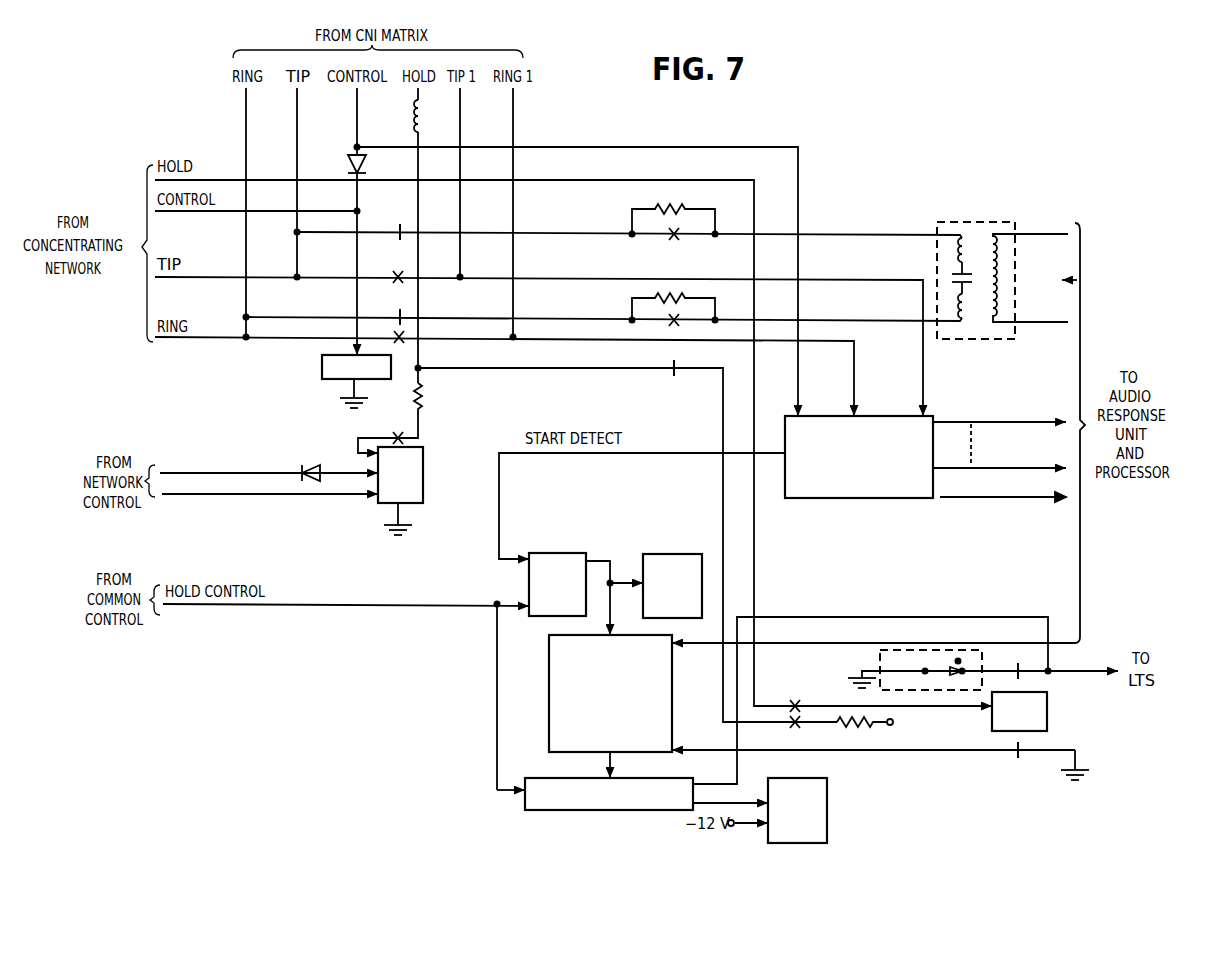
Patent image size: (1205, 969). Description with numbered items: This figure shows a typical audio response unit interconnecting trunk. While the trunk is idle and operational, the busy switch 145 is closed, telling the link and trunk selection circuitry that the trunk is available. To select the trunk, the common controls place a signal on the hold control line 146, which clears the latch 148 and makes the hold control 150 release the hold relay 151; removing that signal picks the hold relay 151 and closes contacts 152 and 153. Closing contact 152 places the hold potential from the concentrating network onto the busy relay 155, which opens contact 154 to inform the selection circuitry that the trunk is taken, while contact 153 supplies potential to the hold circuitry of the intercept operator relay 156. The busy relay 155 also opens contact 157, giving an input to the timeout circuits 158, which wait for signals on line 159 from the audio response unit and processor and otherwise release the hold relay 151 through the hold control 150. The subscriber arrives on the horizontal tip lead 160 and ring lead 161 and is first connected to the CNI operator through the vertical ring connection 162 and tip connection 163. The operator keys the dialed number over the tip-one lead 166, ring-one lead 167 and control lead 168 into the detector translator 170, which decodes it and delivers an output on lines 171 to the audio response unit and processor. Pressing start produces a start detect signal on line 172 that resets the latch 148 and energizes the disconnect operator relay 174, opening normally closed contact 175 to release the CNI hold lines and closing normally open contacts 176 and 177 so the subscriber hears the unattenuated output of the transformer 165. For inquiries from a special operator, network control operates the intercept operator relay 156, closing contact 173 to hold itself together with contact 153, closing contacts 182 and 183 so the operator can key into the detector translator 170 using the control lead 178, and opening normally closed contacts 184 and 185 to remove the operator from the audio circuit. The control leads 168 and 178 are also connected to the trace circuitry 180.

The busy switch 145 is at (880, 655).
The hold control line 146 is at (298, 606).
The latch 148 is at (565, 552).
The hold control 150 is at (530, 778).
The hold relay 151 is at (827, 790).
The contact 152 is at (795, 701).
The contact 153 is at (788, 728).
The contact 154 is at (1011, 668).
The busy relay 155 is at (1047, 716).
The intercept operator relay 156 is at (424, 458).
The contact 157 is at (1017, 760).
The timeout circuits 158 is at (673, 710).
The line 159 is at (845, 643).
The tip lead 160 is at (221, 275).
The ring lead 161 is at (221, 339).
The ring connection 162 is at (246, 112).
The tip connection 163 is at (297, 115).
The audio response unit output transformer 165 is at (966, 220).
The tip 1 lead 166 is at (463, 121).
The ring 1 lead 167 is at (513, 134).
The control lead 168 is at (357, 103).
The detector translator 170 is at (823, 499).
The lines 171 is at (1009, 420).
The start detect line 172 is at (685, 453).
The contact 173 is at (399, 433).
The disconnect operator relay 174 is at (642, 556).
The normally closed contact 175 is at (673, 377).
The normally open contact 176 is at (671, 241).
The normally open contact 177 is at (671, 324).
The control lead 178 is at (231, 213).
The trace circuitry 180 is at (322, 379).
The contact 182 is at (394, 334).
The contact 183 is at (396, 271).
The normally closed contact 184 is at (398, 310).
The normally closed contact 185 is at (400, 224).